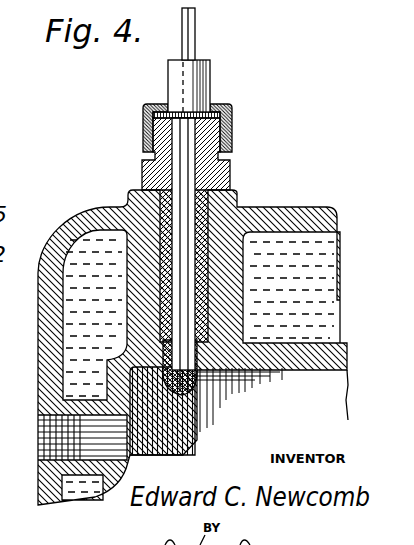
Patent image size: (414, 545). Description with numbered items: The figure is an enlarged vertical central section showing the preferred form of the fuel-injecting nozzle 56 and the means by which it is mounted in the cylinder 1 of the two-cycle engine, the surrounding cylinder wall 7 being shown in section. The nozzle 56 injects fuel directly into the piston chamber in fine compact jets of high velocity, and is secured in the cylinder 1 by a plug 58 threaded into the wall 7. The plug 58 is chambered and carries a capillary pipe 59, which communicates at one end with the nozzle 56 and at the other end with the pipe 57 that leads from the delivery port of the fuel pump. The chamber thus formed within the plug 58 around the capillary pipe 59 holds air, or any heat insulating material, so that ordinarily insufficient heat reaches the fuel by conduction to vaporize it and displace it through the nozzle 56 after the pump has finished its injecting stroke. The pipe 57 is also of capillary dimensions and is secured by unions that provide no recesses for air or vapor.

The cylinder 1 is at (145, 456).
The valve housing 7 is at (43, 358).
The nozzle 56 is at (194, 396).
The pipe 57 is at (192, 30).
The plug 58 is at (230, 173).
The capillary pipe 59 is at (185, 173).